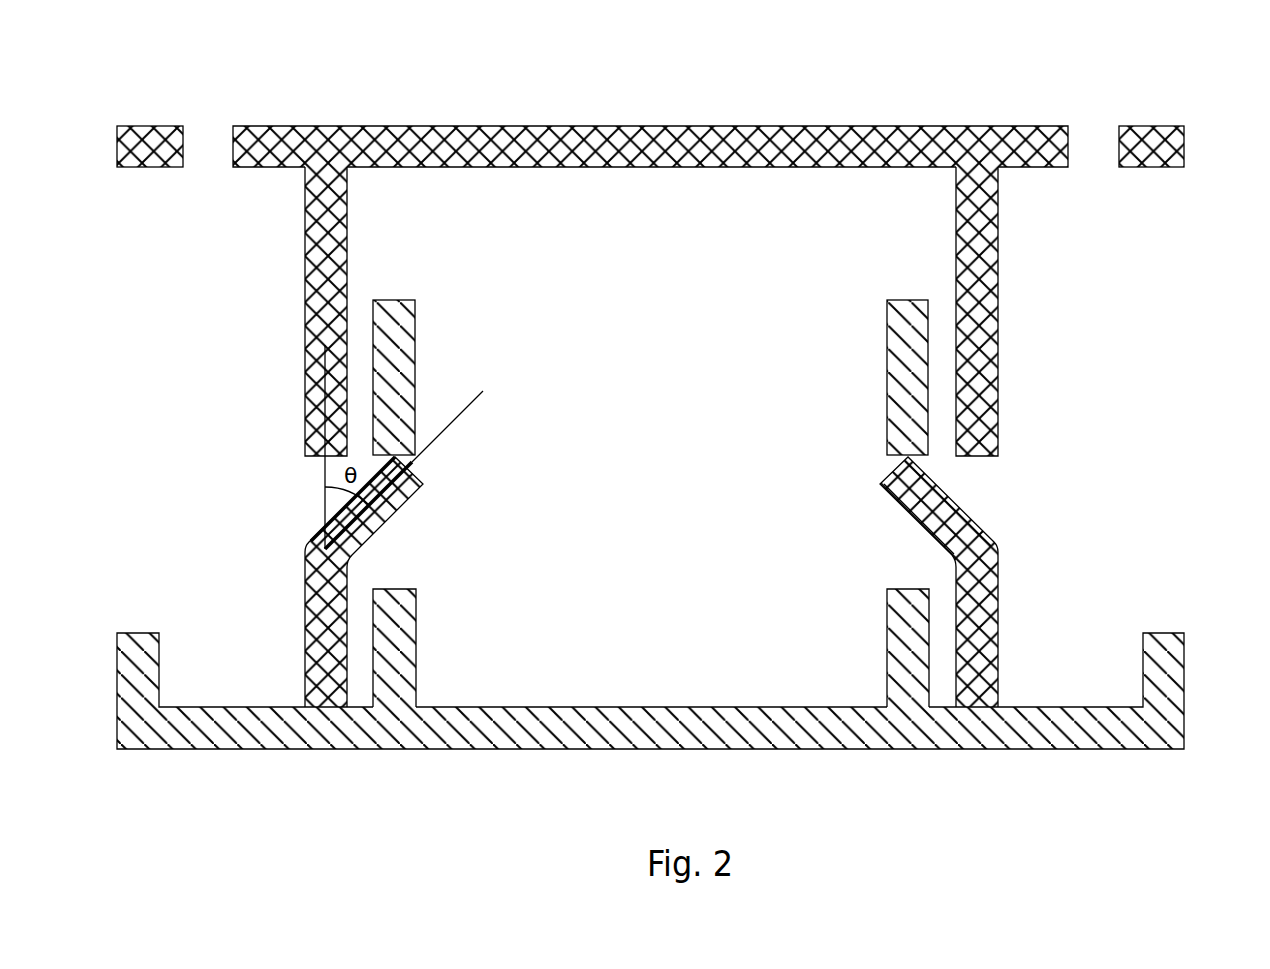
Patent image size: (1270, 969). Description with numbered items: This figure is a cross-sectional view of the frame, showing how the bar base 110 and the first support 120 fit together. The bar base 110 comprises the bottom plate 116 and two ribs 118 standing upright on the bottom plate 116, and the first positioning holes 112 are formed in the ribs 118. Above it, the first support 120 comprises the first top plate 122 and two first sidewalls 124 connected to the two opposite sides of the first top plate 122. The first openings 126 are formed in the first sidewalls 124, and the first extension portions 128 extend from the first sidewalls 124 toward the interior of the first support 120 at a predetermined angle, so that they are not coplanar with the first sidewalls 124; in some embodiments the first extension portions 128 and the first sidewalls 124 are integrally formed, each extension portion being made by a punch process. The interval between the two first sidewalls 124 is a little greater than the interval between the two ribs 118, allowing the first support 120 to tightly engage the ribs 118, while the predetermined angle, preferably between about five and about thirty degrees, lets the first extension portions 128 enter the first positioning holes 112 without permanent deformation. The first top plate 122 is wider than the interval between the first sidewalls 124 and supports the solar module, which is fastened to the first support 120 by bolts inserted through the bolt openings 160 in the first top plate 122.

The bar base 110 is at (650, 732).
The first positioning holes 112 is at (902, 558).
The bottom plate 116 is at (565, 725).
The ribs 118 is at (905, 652).
The first support 120 is at (592, 231).
The first top plate 122 is at (712, 126).
The first sidewalls 124 is at (982, 640).
The first openings 126 is at (1007, 561).
The first extension portions 128 is at (926, 513).
The bolt openings 160 is at (1097, 140).